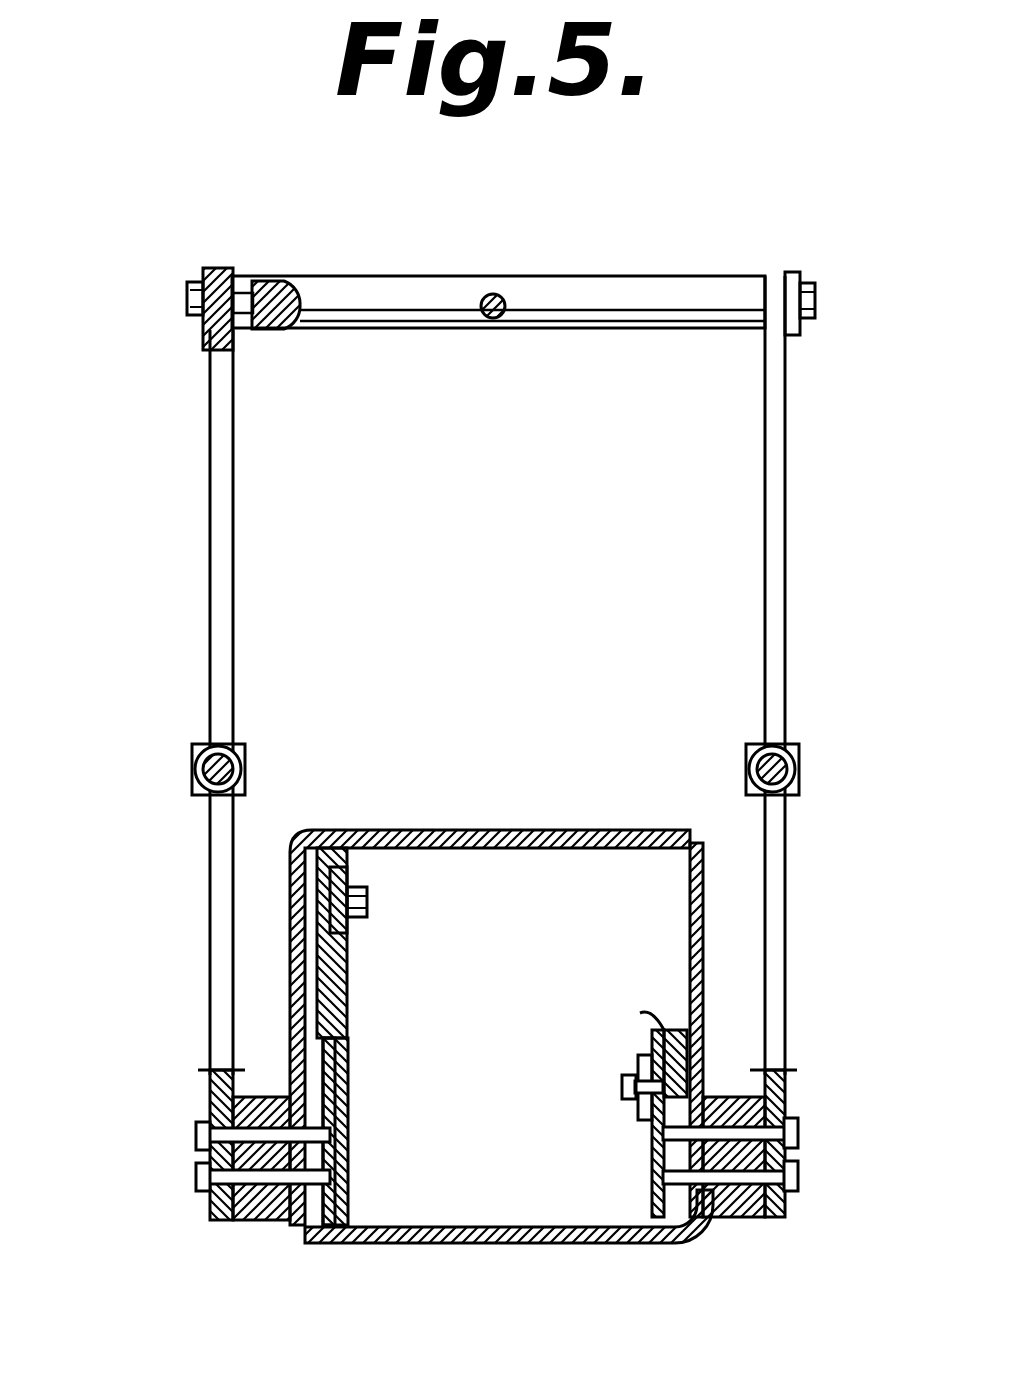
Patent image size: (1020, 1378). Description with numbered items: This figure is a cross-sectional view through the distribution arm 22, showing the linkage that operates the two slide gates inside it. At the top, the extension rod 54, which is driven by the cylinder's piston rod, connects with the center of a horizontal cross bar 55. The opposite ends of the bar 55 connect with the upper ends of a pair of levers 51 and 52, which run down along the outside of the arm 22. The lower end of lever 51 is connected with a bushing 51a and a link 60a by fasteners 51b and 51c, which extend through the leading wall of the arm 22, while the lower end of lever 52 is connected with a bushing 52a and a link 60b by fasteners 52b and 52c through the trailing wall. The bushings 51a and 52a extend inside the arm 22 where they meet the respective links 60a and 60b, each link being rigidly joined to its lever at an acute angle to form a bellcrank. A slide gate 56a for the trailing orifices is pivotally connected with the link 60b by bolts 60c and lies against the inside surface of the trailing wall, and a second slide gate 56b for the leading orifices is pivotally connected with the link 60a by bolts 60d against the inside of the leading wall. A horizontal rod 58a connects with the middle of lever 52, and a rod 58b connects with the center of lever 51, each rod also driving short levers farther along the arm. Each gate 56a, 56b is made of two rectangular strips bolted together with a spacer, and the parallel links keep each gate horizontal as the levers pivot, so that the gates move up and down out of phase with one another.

The distribution arm 22 is at (538, 830).
The lever 51 is at (787, 540).
The bushing 51a is at (748, 1220).
The fastener 51b is at (798, 1136).
The fastener 51c is at (798, 1180).
The lever 52 is at (210, 550).
The bushing 52a is at (275, 1222).
The fastener 52b is at (196, 1135).
The fastener 52c is at (196, 1180).
The extension rod 54 is at (507, 325).
The horizontal cross bar 55 is at (403, 282).
The slide gate 56a is at (336, 832).
The slide gate 56b is at (650, 1035).
The horizontal rod 58a is at (192, 770).
The rod 58b is at (799, 769).
The link 60a is at (690, 1062).
The link 60b is at (337, 1075).
The bolt 60c is at (368, 904).
The bolt 60d is at (622, 1087).